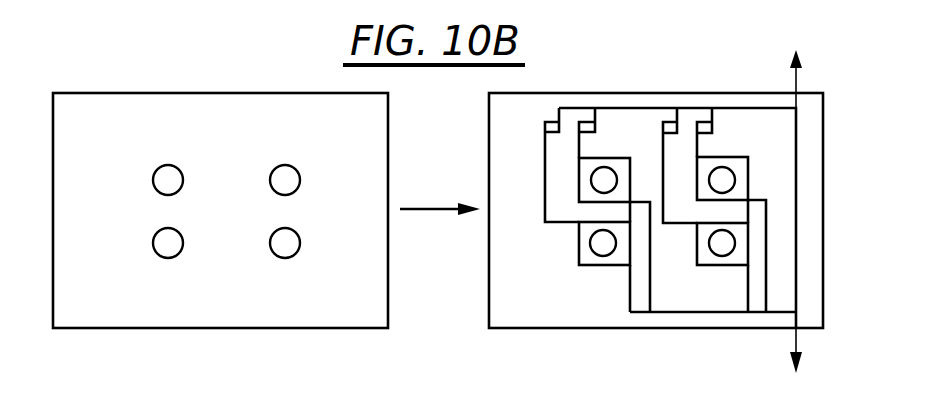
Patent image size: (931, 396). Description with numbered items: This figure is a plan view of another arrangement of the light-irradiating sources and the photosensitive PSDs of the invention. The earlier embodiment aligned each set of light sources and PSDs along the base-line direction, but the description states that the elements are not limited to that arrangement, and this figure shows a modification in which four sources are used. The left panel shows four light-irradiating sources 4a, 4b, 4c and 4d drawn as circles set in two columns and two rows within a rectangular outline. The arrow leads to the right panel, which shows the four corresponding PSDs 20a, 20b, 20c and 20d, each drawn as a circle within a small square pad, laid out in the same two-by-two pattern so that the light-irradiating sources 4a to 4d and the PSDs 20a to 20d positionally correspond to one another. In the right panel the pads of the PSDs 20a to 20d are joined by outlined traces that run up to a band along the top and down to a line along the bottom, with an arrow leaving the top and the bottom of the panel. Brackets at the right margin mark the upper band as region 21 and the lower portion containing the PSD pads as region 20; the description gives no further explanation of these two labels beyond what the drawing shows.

The light-irradiating source 4a is at (168, 165).
The light-irradiating source 4b is at (168, 258).
The light-irradiating source 4c is at (285, 165).
The light-irradiating source 4d is at (285, 258).
The wiring pattern 20 is at (835, 158).
The PSD 20a is at (600, 142).
The PSD 20b is at (607, 265).
The PSD 20c is at (736, 157).
The PSD 20d is at (722, 265).
The common electrode lead 21 is at (835, 93).